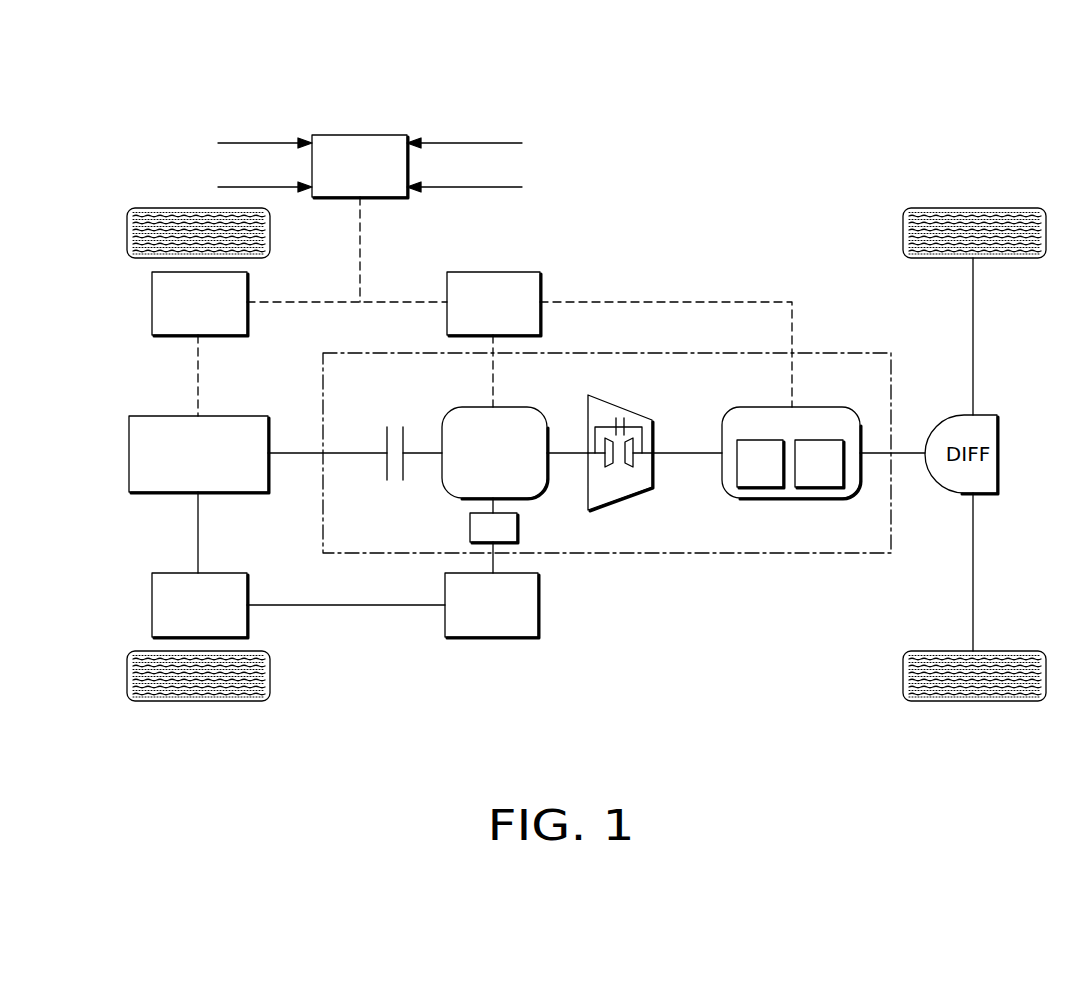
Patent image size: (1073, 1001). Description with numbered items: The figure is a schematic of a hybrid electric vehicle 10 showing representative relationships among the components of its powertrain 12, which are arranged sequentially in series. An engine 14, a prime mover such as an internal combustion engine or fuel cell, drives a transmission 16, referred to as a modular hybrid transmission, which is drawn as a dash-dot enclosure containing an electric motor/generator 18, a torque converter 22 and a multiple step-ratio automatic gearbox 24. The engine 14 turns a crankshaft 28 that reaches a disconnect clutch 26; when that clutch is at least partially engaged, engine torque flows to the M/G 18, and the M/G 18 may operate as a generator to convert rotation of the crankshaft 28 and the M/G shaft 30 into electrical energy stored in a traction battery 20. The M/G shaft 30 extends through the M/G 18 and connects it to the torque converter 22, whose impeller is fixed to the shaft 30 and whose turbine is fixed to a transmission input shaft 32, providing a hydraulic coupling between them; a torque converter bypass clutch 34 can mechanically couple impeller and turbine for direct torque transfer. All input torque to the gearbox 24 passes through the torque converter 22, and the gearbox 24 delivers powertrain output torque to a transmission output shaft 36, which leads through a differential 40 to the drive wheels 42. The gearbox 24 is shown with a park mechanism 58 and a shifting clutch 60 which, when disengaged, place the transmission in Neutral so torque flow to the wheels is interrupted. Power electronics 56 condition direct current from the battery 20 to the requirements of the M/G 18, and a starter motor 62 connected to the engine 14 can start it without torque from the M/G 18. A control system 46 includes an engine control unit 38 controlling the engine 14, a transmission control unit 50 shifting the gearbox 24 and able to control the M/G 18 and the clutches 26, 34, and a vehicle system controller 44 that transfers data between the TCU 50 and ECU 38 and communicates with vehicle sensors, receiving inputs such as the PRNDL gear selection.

The hybrid vehicle 10 is at (759, 144).
The powertrain 12 is at (408, 670).
The engine 14 is at (129, 453).
The transmission 16 is at (728, 553).
The electric motor/generator 18 is at (510, 407).
The traction battery 20 is at (493, 637).
The torque converter 22 is at (607, 508).
The gearbox 24 is at (804, 431).
The disconnect clutch 26 is at (386, 474).
The crankshaft 28 is at (310, 453).
The M/G shaft 30 is at (420, 450).
The transmission input shaft 32 is at (680, 458).
The torque converter bypass clutch 34 is at (633, 420).
The transmission output shaft 36 is at (905, 453).
The engine control unit 38 is at (152, 302).
The differential 40 is at (997, 453).
The drive wheels 42 is at (973, 208).
The vehicle system controller 44 is at (357, 135).
The control system 46 is at (445, 94).
The transmission control unit 50 is at (540, 288).
The power electronics 56 is at (470, 528).
The park mechanism 58 is at (760, 464).
The shifting clutch 60 is at (819, 464).
The starter motor 62 is at (152, 605).